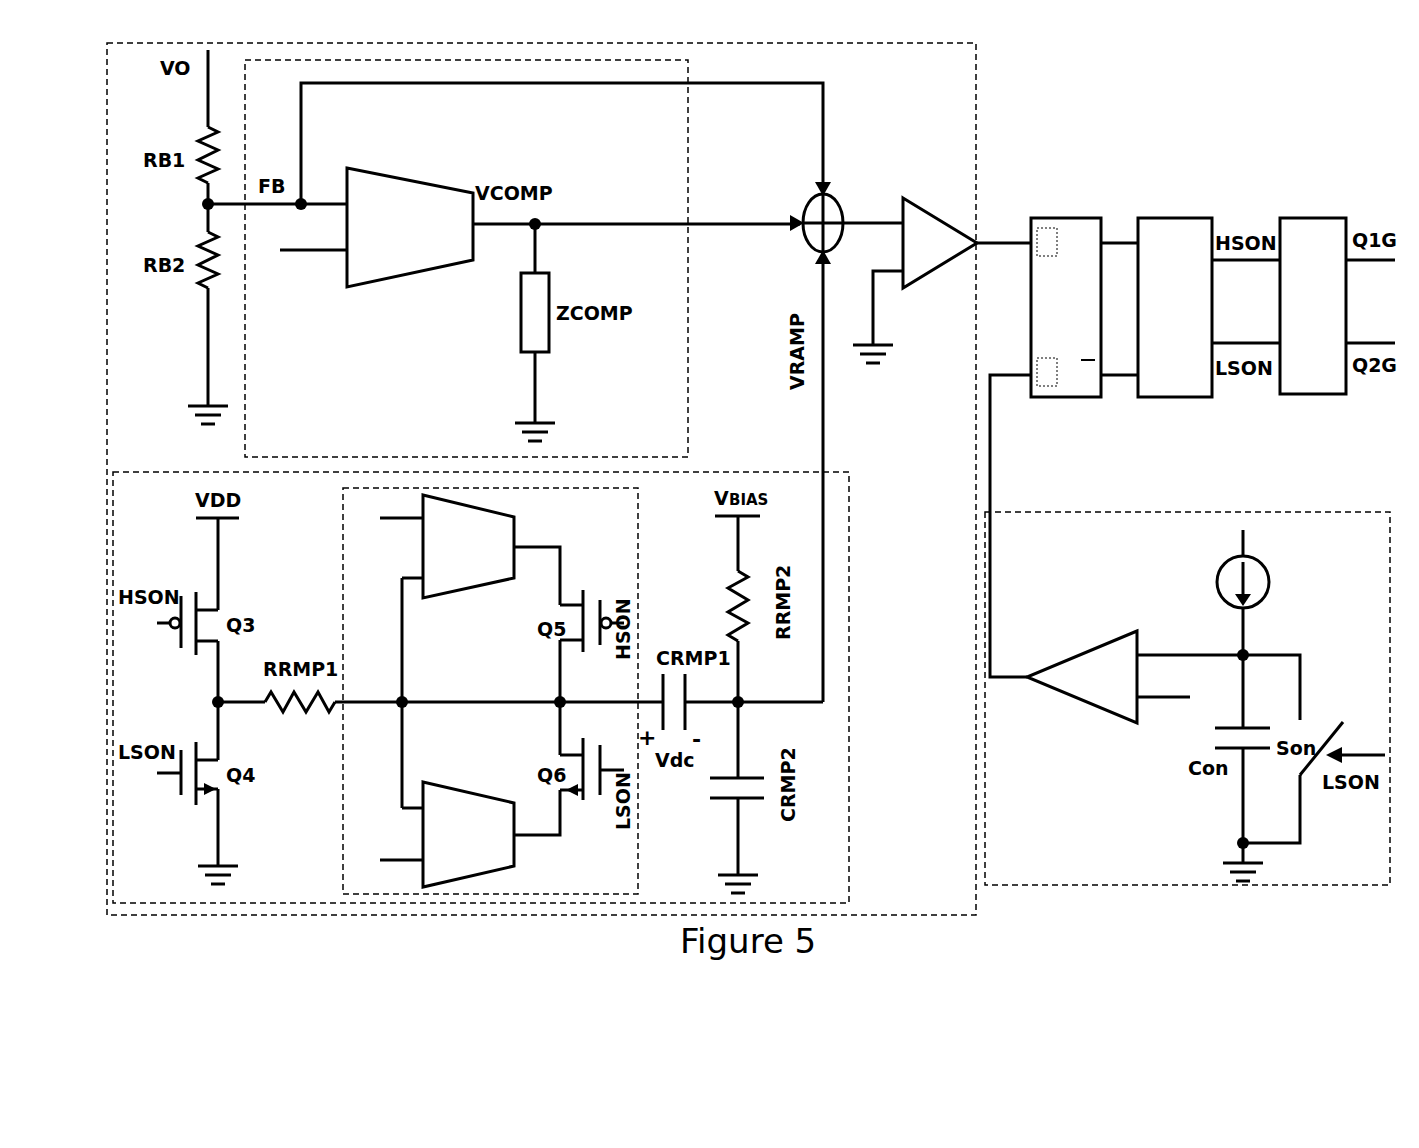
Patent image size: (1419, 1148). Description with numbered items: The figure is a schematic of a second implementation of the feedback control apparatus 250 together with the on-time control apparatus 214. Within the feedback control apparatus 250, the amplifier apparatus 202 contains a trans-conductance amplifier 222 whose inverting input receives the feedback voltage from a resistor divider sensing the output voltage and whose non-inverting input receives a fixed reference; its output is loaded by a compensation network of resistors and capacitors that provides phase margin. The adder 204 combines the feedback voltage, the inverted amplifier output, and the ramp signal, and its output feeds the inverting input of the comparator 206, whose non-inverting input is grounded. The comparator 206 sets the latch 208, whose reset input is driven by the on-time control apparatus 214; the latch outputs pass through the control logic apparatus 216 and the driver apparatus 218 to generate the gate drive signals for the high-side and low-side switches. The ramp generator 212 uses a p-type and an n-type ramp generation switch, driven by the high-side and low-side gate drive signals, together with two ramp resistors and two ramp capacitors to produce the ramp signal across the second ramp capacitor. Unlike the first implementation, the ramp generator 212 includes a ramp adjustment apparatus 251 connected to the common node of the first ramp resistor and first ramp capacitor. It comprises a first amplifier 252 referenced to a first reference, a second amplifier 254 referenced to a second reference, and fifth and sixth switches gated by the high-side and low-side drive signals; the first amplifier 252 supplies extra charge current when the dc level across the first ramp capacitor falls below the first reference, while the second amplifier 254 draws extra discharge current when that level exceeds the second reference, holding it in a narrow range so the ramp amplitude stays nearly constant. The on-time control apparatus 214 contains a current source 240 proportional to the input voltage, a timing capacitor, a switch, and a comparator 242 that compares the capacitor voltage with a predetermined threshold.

The amplifier apparatus 202 is at (466, 258).
The adder 204 is at (845, 200).
The comparator 206 is at (920, 200).
The latch 208 is at (1066, 307).
The ramp generator 212 is at (481, 687).
The on-time control apparatus 214 is at (1187, 698).
The control logic apparatus 216 is at (1160, 398).
The driver apparatus 218 is at (1293, 395).
The trans-conductance amplifier 222 is at (376, 227).
The current source 240 is at (1218, 568).
The comparator 242 is at (1078, 652).
The feedback control apparatus 250 is at (541, 479).
The ramp adjustment apparatus 251 is at (490, 691).
The first amplifier 252 is at (452, 547).
The second amplifier 254 is at (452, 838).